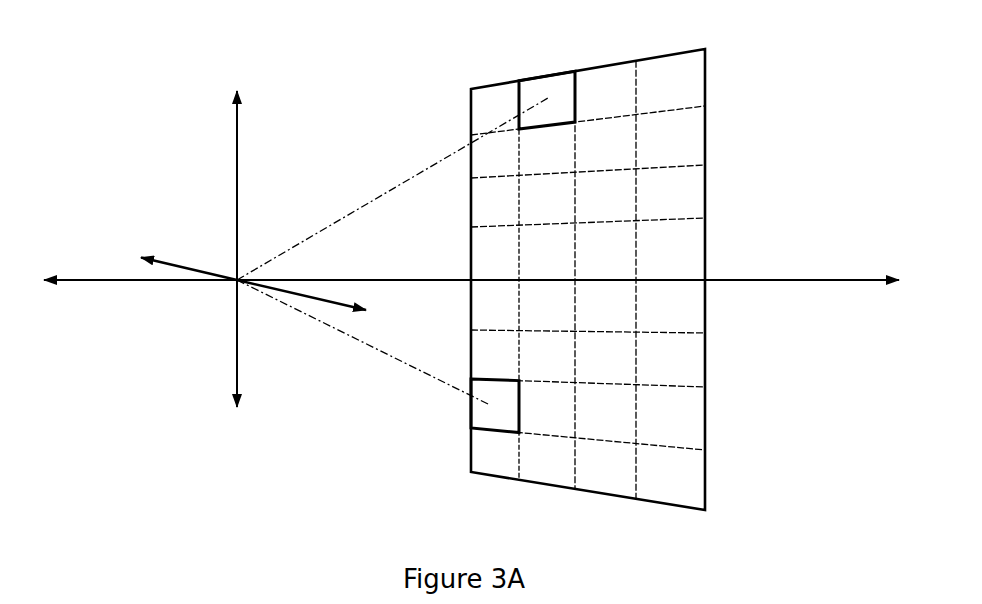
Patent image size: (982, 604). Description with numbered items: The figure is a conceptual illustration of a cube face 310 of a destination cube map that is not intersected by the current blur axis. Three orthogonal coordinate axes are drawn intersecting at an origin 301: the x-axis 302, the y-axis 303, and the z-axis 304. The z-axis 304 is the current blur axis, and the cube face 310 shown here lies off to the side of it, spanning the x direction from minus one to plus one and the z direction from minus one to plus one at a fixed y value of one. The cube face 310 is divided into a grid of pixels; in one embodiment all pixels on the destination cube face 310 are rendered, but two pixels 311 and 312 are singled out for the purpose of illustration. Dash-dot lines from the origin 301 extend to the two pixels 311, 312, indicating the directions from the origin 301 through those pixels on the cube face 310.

The origin 301 is at (237, 280).
The x-axis 302 is at (187, 267).
The y-axis 303 is at (847, 280).
The z-axis 304 is at (237, 366).
The cube face 310 is at (705, 373).
The pixel 311 is at (550, 72).
The pixel 312 is at (493, 431).